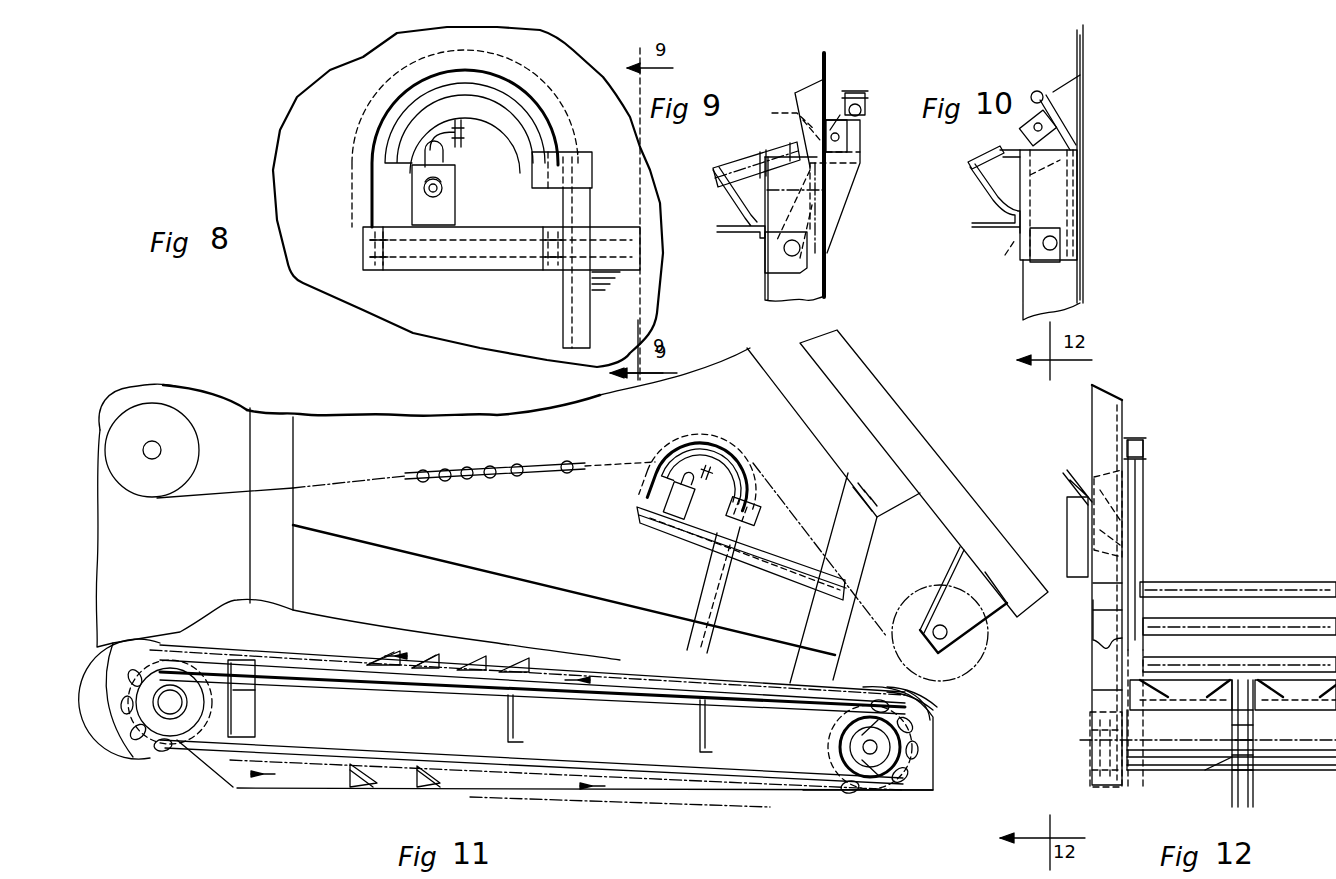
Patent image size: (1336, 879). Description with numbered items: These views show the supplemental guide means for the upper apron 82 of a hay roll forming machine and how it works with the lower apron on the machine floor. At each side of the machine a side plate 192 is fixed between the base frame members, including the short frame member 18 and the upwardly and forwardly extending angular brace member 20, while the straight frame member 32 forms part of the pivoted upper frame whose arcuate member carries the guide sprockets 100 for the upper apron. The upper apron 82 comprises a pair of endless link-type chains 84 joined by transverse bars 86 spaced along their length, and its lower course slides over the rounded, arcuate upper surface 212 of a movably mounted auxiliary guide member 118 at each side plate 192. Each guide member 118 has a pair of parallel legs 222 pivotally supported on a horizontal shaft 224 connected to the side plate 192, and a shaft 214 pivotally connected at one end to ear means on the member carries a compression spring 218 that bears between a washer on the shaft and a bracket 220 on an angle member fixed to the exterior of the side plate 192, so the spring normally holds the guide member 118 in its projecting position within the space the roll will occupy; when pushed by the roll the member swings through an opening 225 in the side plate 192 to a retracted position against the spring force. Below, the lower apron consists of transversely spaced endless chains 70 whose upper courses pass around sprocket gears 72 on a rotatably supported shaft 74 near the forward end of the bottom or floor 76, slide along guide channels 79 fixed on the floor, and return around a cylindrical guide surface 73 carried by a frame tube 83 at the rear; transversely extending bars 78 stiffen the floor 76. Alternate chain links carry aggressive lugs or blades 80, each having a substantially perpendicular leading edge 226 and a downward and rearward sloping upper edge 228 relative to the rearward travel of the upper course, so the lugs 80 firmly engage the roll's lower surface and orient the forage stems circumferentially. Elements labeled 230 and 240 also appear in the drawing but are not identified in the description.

In FIG. 11, the frame member 18 is at (832, 664).
In FIG. 12, the frame member 18 is at (1108, 689).
In FIG. 11, the angular brace member 20 is at (818, 416).
In FIG. 11, the straight frame member 32 is at (905, 425).
In FIG. 12, the straight frame member 32 is at (1092, 431).
In FIG. 11, the endless flexible chains 70 is at (120, 745).
In FIG. 12, the endless flexible chains 70 is at (1232, 768).
In FIG. 11, the sprocket gears 72 is at (122, 700).
In FIG. 12, the sprocket gears 72 is at (1258, 775).
In FIG. 11, the cylindrical guide surface 73 is at (905, 737).
In FIG. 12, the cylindrical guide surface 73 is at (1195, 775).
In FIG. 11, the shaft 74 is at (178, 705).
In FIG. 12, the shaft 74 is at (1105, 773).
In FIG. 11, the bottom or floor 76 is at (408, 681).
In FIG. 11, the transversely extending bars 78 is at (255, 708).
In FIG. 11, the guide channels 79 is at (548, 690).
In FIG. 11, the lugs or blades 80 is at (433, 663).
In FIG. 12, the lugs or blades 80 is at (1257, 800).
In FIG. 11, the upper apron 82 is at (558, 460).
In FIG. 11, the frame tube 83 is at (933, 778).
In FIG. 12, the frame tube 83 is at (1163, 770).
In FIG. 9, the link-type chains 84 is at (852, 91).
In FIG. 12, the link-type chains 84 is at (1140, 440).
In FIG. 12, the bars 86 is at (1240, 584).
In FIG. 11, the guide sprockets 100 is at (967, 652).
In FIG. 12, the guide sprockets 100 is at (1093, 636).
In FIG. 8, the auxiliary guide members 118 is at (527, 173).
In FIG. 9, the auxiliary guide members 118 is at (852, 151).
In FIG. 10, the auxiliary guide members 118 is at (1085, 126).
In FIG. 11, the auxiliary guide members 118 is at (713, 500).
In FIG. 12, the auxiliary guide members 118 is at (1143, 469).
In FIG. 8, the side plates 192 is at (370, 290).
In FIG. 9, the side plates 192 is at (830, 267).
In FIG. 10, the side plates 192 is at (1086, 50).
In FIG. 11, the side plates 192 is at (465, 504).
In FIG. 8, the arcuate upper surface 212 is at (513, 137).
In FIG. 9, the arcuate upper surface 212 is at (858, 116).
In FIG. 10, the arcuate upper surface 212 is at (1037, 91).
In FIG. 11, the arcuate upper surface 212 is at (717, 445).
In FIG. 8, the shaft 214 is at (455, 135).
In FIG. 9, the shaft 214 is at (790, 115).
In FIG. 10, the shaft 214 is at (1022, 128).
In FIG. 8, the compression spring 218 is at (447, 158).
In FIG. 9, the compression spring 218 is at (676, 153).
In FIG. 10, the compression spring 218 is at (988, 153).
In FIG. 8, the bracket 220 is at (430, 210).
In FIG. 9, the bracket 220 is at (740, 210).
In FIG. 10, the bracket 220 is at (990, 203).
In FIG. 11, the bracket 220 is at (680, 528).
In FIG. 12, the bracket 220 is at (1067, 474).
In FIG. 8, the parallel legs 222 is at (378, 210).
In FIG. 9, the parallel legs 222 is at (845, 188).
In FIG. 10, the parallel legs 222 is at (1010, 256).
In FIG. 8, the horizontal shaft 224 is at (508, 265).
In FIG. 9, the horizontal shaft 224 is at (788, 250).
In FIG. 10, the horizontal shaft 224 is at (1057, 243).
In FIG. 8, the opening 225 is at (503, 100).
In FIG. 9, the opening 225 is at (828, 70).
In FIG. 10, the opening 225 is at (1085, 96).
In FIG. 11, the leading edge 226 is at (401, 665).
In FIG. 11, the upper edge 228 is at (385, 660).
In FIG. 11, the strut 230 is at (780, 660).
In FIG. 11, the trough 240 is at (928, 694).
In FIG. 12, the trough 240 is at (1170, 690).